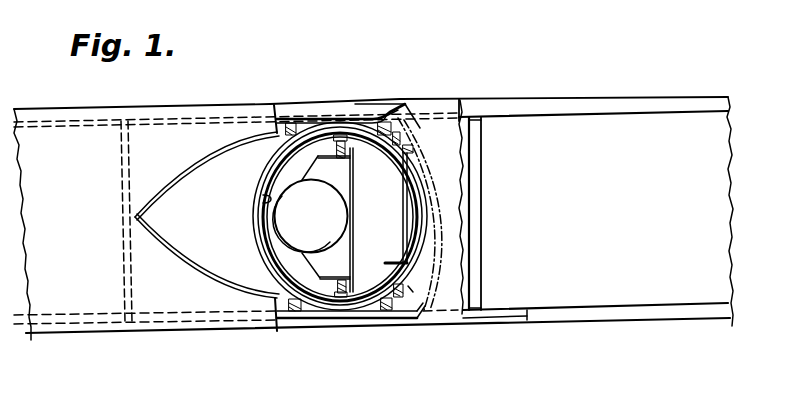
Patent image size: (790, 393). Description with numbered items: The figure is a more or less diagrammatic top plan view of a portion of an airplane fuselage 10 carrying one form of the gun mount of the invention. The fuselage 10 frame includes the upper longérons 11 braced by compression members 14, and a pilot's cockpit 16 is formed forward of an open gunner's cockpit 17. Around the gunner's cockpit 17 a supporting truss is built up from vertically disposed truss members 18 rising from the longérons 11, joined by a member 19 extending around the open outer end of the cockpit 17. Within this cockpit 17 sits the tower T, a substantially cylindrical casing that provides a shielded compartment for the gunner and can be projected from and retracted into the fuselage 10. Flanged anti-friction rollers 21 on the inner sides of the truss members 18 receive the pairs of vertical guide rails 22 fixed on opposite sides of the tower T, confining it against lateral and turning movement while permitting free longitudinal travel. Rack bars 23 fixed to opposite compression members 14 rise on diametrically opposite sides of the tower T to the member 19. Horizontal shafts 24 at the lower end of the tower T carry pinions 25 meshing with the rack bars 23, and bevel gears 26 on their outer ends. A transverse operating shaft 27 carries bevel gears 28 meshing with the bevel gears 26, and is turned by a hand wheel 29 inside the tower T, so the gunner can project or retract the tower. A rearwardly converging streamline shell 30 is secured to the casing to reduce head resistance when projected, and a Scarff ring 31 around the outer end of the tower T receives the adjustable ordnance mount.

The airplane fuselage 10 is at (235, 105).
The upper longérons 11 is at (515, 111).
The compression members 14 is at (124, 277).
The pilot's cockpit 16 is at (457, 313).
The gunner's cockpit 17 is at (325, 307).
The truss members 18 is at (172, 113).
The connecting member 19 is at (405, 303).
The flanged anti-friction rollers 21 is at (381, 120).
The guide rails 22 is at (297, 153).
The rack bars 23 is at (338, 123).
The shafts 24 is at (351, 152).
The pinion 25 is at (343, 158).
The bevel gears 26 is at (411, 289).
The operating shaft 27 is at (403, 217).
The bevel gears 28 is at (404, 277).
The operating hand wheel 29 is at (407, 263).
The streamline shell 30 is at (200, 254).
The Scarff ring 31 is at (415, 172).
The tower T is at (263, 197).